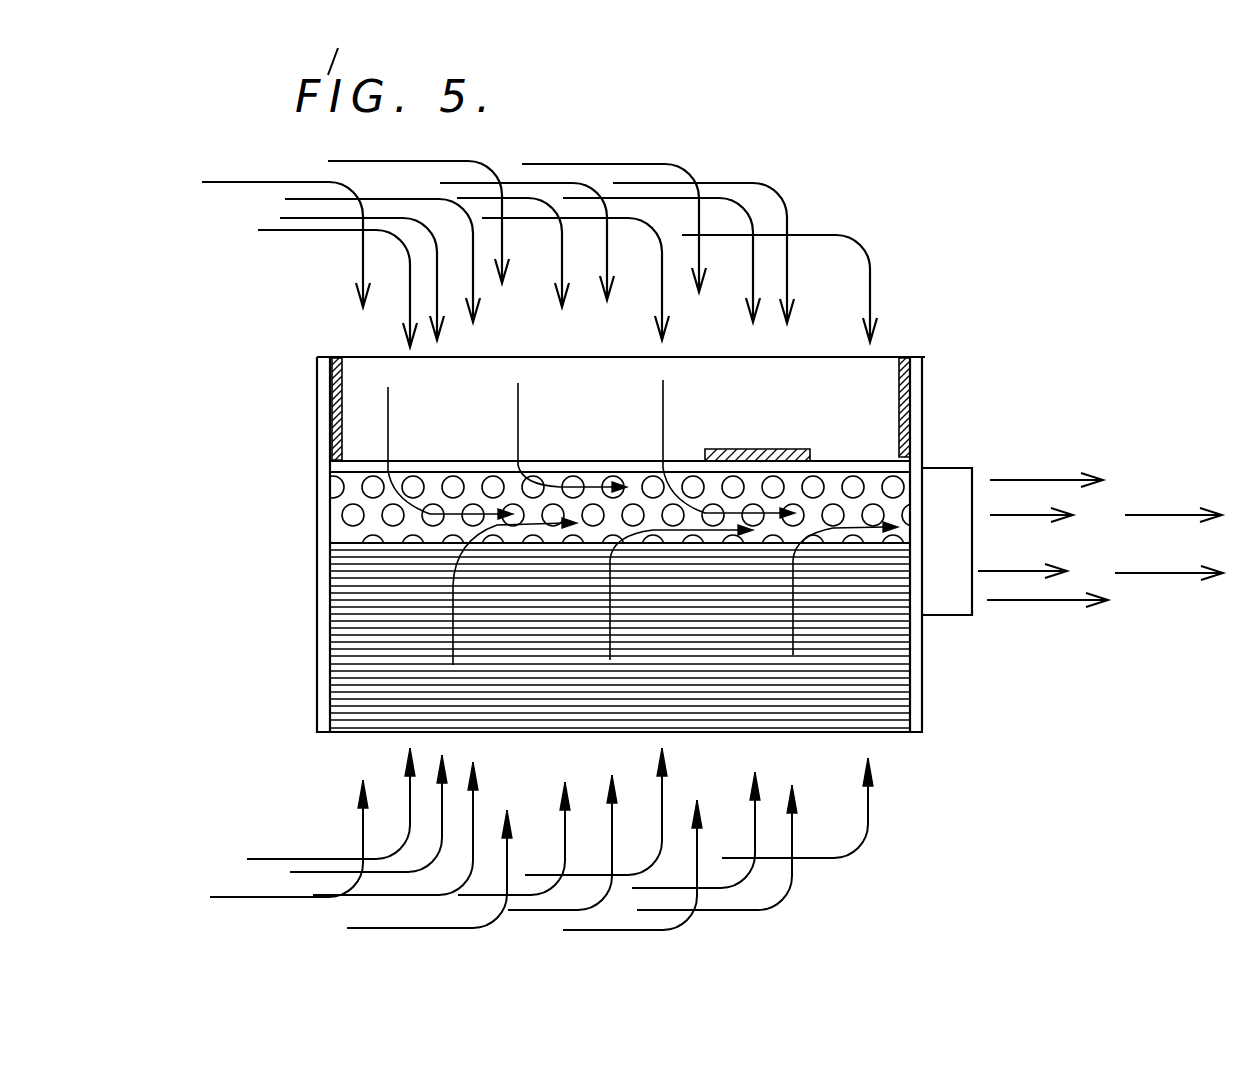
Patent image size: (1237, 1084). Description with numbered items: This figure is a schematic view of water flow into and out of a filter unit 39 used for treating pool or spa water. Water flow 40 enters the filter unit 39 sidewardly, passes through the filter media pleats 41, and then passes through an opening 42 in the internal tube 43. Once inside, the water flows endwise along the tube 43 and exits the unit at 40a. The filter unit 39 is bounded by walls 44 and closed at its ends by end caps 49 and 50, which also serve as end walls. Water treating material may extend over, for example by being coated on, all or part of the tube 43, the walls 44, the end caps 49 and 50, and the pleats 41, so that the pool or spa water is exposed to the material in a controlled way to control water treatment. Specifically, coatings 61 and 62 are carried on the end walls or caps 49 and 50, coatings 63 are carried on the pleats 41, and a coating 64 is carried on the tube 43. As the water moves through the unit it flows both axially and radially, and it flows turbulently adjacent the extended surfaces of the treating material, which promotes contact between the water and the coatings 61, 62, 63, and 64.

The filter unit 39 is at (890, 747).
The water flow 40 is at (539, 254).
The exit flow 40a is at (1100, 532).
The filter media pleats 41 is at (402, 673).
The opening 42 is at (436, 520).
The internal tube 43 is at (558, 474).
The walls 44 is at (857, 458).
The end cap 49 is at (317, 604).
The end cap 50 is at (923, 647).
The coating 61 is at (352, 374).
The coating 62 is at (898, 372).
The coatings 63 is at (852, 676).
The coating 64 is at (720, 448).